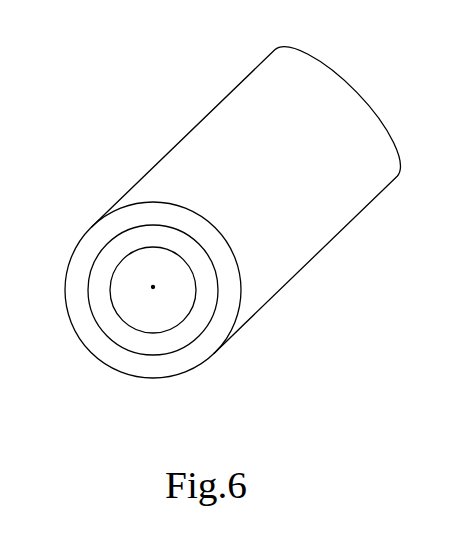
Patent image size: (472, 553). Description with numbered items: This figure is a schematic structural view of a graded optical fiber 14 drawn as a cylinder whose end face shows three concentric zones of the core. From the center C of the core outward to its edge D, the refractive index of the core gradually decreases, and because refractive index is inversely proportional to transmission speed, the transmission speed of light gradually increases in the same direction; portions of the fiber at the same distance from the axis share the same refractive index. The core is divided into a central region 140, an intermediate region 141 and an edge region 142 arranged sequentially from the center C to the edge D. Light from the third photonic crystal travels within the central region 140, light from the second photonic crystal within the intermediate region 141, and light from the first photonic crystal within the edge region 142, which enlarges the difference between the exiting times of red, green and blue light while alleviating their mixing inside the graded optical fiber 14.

The graded optical fiber 14 is at (125, 178).
The central region 140 is at (150, 313).
The intermediate region 141 is at (190, 332).
The edge region 142 is at (77, 273).
The center of the core C is at (153, 287).
The edge of the core D is at (240, 257).